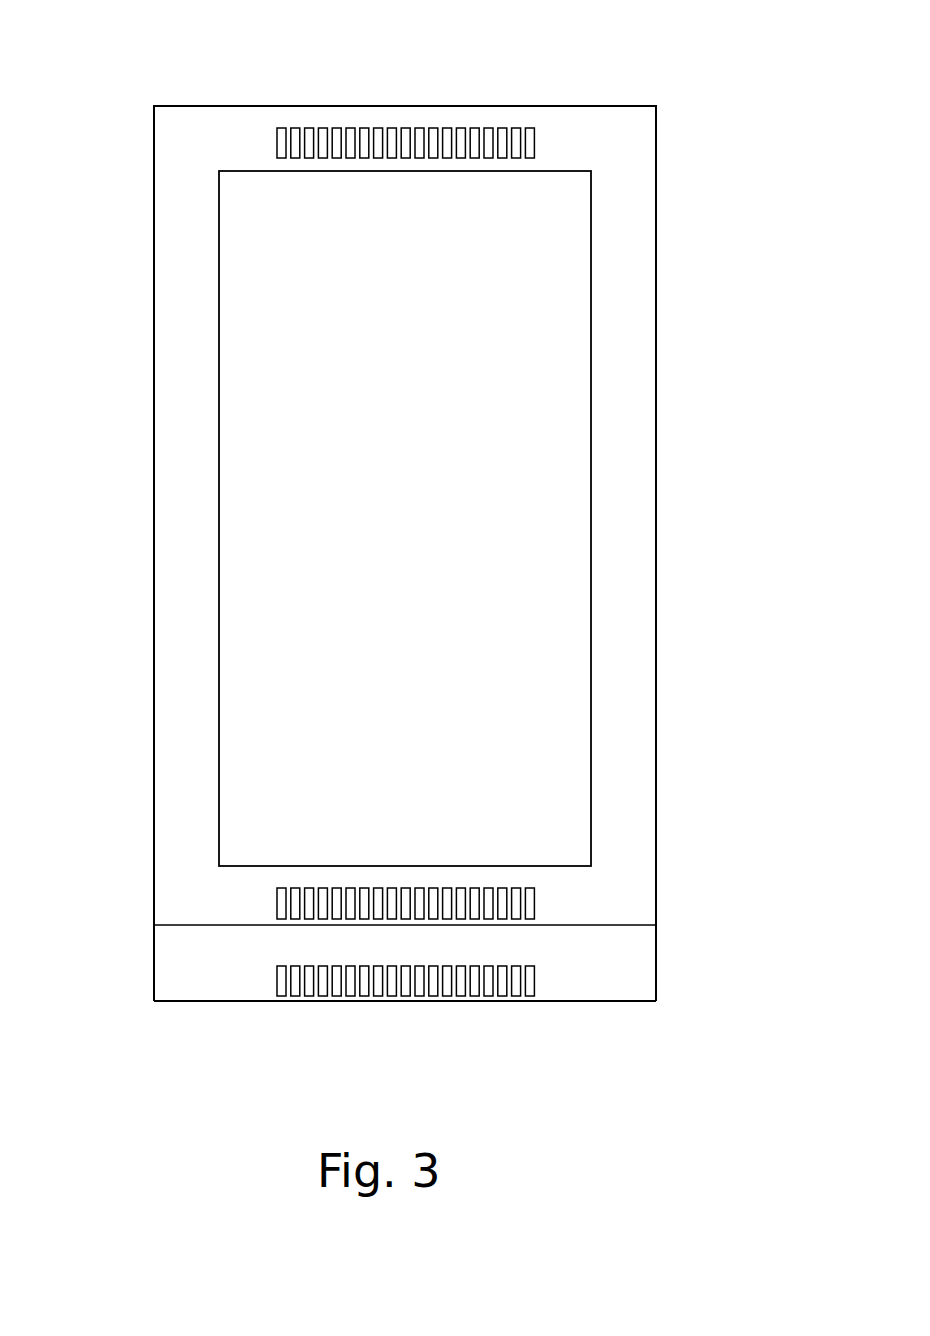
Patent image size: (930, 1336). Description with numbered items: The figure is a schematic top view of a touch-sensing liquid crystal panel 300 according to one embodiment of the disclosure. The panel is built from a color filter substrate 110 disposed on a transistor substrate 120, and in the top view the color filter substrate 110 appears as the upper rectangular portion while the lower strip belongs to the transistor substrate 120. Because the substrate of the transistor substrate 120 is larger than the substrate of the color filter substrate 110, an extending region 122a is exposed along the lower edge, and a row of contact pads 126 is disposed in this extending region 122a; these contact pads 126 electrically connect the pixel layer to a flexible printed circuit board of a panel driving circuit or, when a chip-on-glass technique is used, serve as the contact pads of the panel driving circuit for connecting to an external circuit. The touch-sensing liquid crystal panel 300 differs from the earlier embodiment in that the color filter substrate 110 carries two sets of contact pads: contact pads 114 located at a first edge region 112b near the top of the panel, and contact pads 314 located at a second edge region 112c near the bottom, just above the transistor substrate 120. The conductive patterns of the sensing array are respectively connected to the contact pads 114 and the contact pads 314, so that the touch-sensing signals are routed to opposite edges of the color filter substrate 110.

The touch-sensing liquid crystal panel 300 is at (98, 23).
The color filter substrate 110 is at (657, 140).
The first edge region 112b is at (586, 122).
The second edge region 112c is at (580, 903).
The contact pads 114 is at (348, 131).
The contact pads 314 is at (277, 904).
The transistor substrate 120 is at (657, 965).
The extending region 122a is at (193, 977).
The contact pads 126 is at (406, 993).